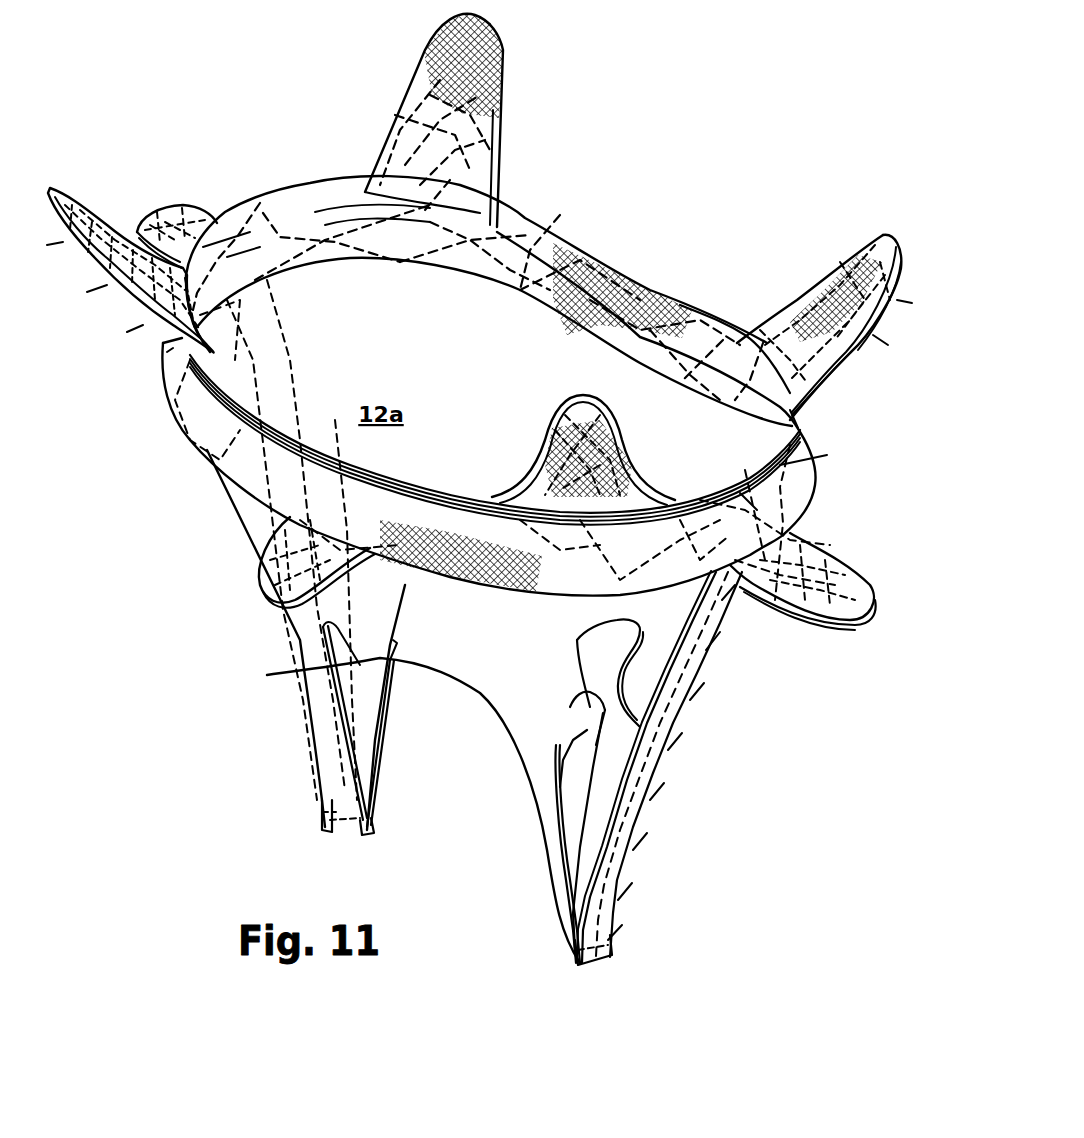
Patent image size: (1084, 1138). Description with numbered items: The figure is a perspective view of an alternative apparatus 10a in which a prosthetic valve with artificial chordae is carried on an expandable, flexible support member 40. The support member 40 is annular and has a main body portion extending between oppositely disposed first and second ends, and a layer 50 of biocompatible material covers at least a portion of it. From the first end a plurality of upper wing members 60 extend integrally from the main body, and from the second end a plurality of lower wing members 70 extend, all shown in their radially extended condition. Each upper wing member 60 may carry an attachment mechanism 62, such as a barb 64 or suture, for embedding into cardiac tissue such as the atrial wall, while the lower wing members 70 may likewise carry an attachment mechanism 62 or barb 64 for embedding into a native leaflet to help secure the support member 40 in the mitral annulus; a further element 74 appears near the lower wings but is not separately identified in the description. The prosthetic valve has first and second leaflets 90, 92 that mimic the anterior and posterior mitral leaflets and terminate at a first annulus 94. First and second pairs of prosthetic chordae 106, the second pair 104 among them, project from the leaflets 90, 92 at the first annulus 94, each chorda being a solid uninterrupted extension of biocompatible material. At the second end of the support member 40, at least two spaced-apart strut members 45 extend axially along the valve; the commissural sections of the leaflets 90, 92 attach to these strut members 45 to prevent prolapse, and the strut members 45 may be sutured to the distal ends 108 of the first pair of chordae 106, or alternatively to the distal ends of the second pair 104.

The apparatus 10a is at (683, 122).
The expandable support member 40 is at (265, 203).
The strut member 45 is at (300, 338).
The layer of biocompatible material 50 is at (705, 318).
The upper wing member 60 is at (74, 180).
The attachment mechanism 62 is at (910, 328).
The barb 64 is at (848, 365).
The lower wing member 70 is at (152, 205).
The wing 74 is at (818, 535).
The first leaflet 90 is at (300, 678).
The second leaflet 92 is at (603, 660).
The first annulus 94 is at (593, 707).
The second pair of prosthetic chordae 104 is at (375, 742).
The prosthetic chordae 106 is at (343, 765).
The distal end 108 is at (328, 818).